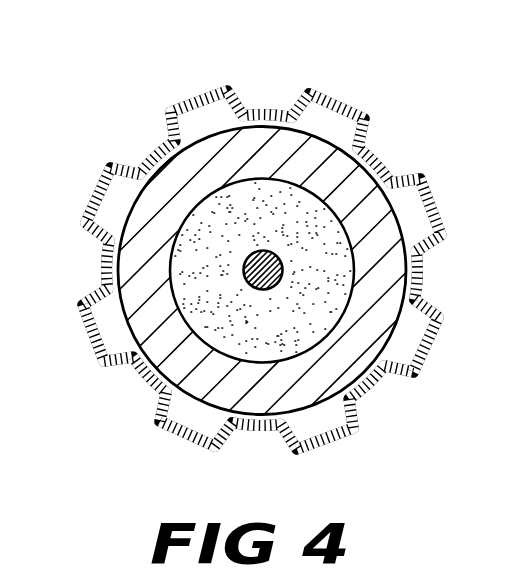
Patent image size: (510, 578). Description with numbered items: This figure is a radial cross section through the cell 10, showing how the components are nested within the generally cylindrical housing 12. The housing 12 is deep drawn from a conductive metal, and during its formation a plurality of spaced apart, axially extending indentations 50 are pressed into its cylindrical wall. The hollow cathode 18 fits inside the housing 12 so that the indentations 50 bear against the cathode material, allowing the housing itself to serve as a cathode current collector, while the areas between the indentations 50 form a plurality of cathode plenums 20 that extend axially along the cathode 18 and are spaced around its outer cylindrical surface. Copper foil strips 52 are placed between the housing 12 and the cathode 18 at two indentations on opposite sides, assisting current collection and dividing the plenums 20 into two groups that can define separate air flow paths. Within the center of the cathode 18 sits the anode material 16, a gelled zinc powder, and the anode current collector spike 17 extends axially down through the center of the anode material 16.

The cell 10 is at (119, 71).
The housing 12 is at (337, 443).
The anode material 16 is at (295, 237).
The anode current collector spike 17 is at (258, 276).
The cathode 18 is at (388, 235).
The cathode plenums 20 is at (201, 122).
The indentations 50 is at (152, 152).
The copper foil strips 52 is at (424, 250).